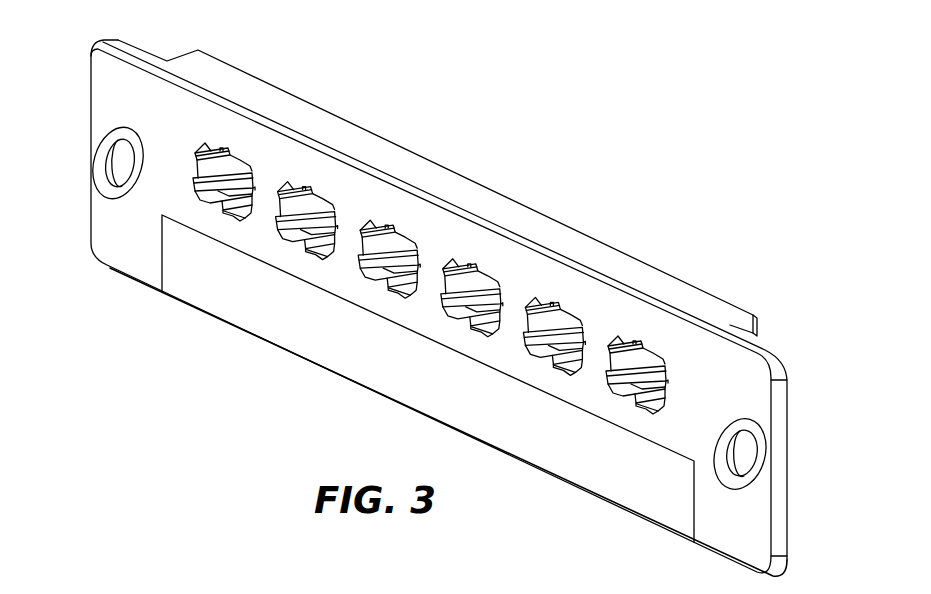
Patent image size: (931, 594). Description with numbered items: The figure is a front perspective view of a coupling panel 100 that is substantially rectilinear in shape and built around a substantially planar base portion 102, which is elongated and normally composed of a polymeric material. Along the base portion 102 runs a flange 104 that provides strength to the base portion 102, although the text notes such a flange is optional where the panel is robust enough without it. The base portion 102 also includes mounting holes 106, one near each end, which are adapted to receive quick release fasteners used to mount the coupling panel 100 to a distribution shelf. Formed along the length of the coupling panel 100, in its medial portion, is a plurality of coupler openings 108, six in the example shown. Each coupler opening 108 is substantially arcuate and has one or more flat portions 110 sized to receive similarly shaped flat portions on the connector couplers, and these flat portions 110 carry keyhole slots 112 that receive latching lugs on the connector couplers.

The coupling panel 100 is at (443, 308).
The base portion 102 is at (750, 402).
The flange 104 is at (367, 140).
The mounting hole 106 is at (113, 184).
The coupler opening 108 is at (494, 274).
The flat portion 110 is at (290, 181).
The keyhole slot 112 is at (388, 224).